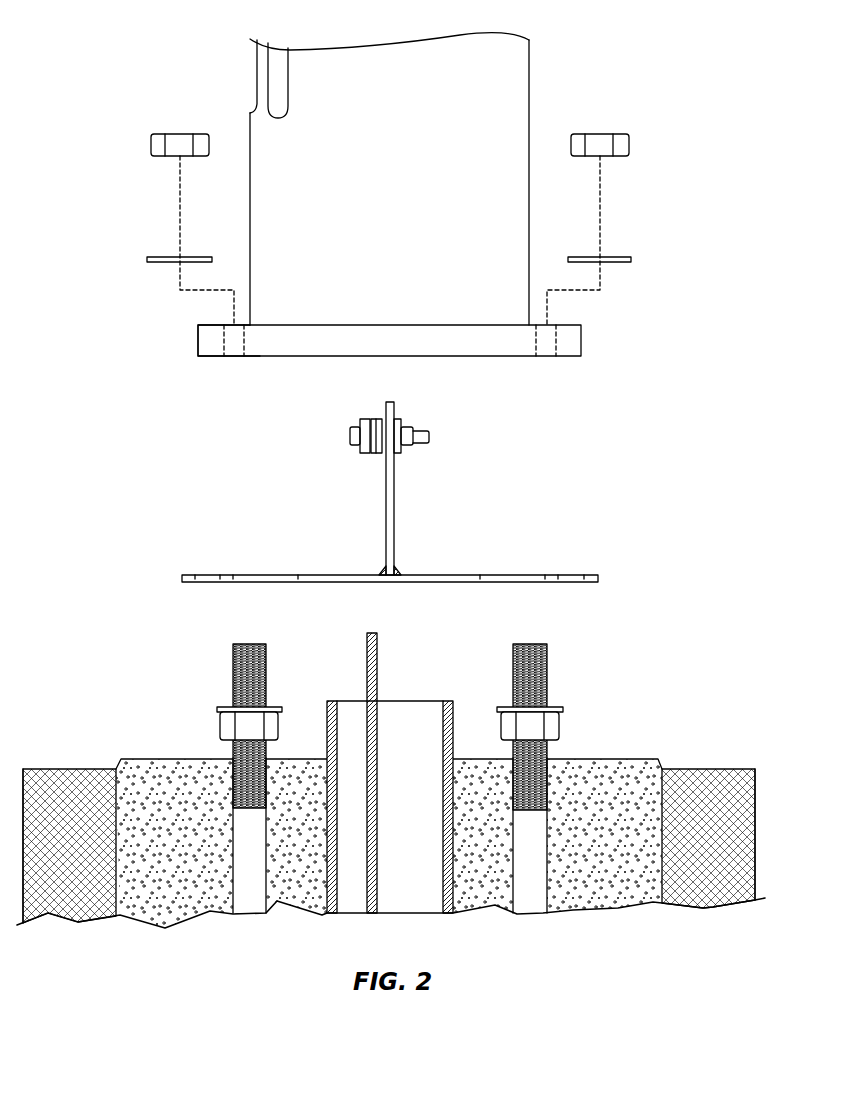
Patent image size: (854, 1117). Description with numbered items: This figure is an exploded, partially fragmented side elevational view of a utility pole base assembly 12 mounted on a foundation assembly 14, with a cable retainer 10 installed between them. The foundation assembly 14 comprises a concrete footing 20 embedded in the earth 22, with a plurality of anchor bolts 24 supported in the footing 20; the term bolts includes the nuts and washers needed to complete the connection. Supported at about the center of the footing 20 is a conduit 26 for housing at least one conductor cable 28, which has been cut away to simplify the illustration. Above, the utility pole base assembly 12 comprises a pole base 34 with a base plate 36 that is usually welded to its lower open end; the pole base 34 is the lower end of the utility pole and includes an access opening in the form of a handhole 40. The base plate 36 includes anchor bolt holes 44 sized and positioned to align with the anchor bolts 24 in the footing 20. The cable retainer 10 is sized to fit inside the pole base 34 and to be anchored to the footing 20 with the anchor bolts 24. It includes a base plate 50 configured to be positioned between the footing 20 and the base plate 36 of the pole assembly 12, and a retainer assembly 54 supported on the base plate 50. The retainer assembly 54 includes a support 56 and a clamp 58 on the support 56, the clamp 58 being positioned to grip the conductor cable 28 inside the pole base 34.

The cable retainer 10 is at (390, 492).
The utility pole base assembly 12 is at (628, 244).
The foundation assembly 14 is at (550, 673).
The concrete footing 20 is at (630, 758).
The earth 22 is at (722, 769).
The anchor bolts 24 is at (232, 677).
The conduit 26 is at (417, 700).
The conductor cable 28 is at (367, 668).
The pole base 34 is at (581, 340).
The base plate 36 is at (203, 337).
The handhole 40 is at (257, 69).
The anchor bolt holes 44 is at (543, 347).
The base plate 50 is at (438, 574).
The retainer assembly 54 is at (395, 479).
The support 56 is at (385, 553).
The clamp 58 is at (368, 455).